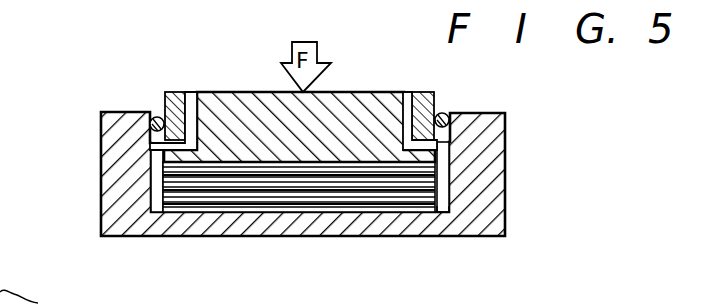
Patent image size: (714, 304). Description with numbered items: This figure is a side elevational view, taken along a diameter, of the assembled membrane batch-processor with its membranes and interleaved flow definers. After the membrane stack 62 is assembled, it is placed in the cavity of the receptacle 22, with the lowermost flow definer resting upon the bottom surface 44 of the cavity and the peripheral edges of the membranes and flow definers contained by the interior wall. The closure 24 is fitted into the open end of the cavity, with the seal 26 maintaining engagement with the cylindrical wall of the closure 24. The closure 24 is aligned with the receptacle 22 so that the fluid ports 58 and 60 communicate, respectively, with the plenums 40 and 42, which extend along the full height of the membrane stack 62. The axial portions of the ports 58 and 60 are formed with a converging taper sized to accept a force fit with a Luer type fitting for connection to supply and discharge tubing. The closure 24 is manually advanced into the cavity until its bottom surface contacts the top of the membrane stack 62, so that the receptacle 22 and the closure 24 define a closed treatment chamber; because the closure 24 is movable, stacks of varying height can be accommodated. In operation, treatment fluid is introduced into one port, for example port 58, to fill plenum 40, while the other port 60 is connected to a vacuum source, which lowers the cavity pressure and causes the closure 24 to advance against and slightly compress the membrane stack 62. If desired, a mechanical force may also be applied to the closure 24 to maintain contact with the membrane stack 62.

The receptacle 22 is at (510, 208).
The closure 24 is at (346, 91).
The seal 26 is at (448, 115).
The plenum 40 is at (162, 180).
The plenum 42 is at (448, 172).
The bottom surface 44 is at (443, 237).
The fluid port 58 is at (192, 92).
The fluid port 60 is at (409, 92).
The membrane stack 62 is at (286, 195).